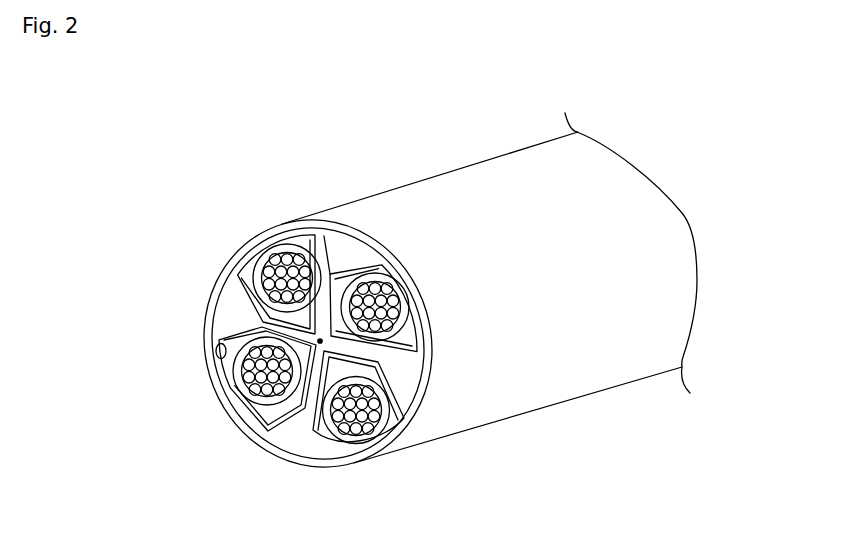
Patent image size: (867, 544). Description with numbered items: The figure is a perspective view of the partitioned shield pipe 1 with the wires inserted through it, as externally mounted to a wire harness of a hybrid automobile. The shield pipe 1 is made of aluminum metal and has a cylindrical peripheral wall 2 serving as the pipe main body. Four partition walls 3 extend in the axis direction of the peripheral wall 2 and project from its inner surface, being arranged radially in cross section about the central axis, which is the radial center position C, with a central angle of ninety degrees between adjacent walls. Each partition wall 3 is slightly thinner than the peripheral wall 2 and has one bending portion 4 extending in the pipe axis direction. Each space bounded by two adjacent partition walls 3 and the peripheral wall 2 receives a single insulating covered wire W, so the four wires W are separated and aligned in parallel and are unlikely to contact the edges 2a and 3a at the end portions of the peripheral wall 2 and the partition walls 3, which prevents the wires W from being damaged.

The partitioned shield pipe 1 is at (223, 140).
The cylindrical peripheral wall 2 is at (448, 171).
The edge of end portion of the peripheral wall 2a is at (407, 272).
The partition wall 3 is at (350, 316).
The edge of end portion of the partition wall 3a is at (332, 270).
The bending portion 4 is at (316, 260).
The insulating covered wire W is at (364, 288).
The radial center position C is at (318, 343).